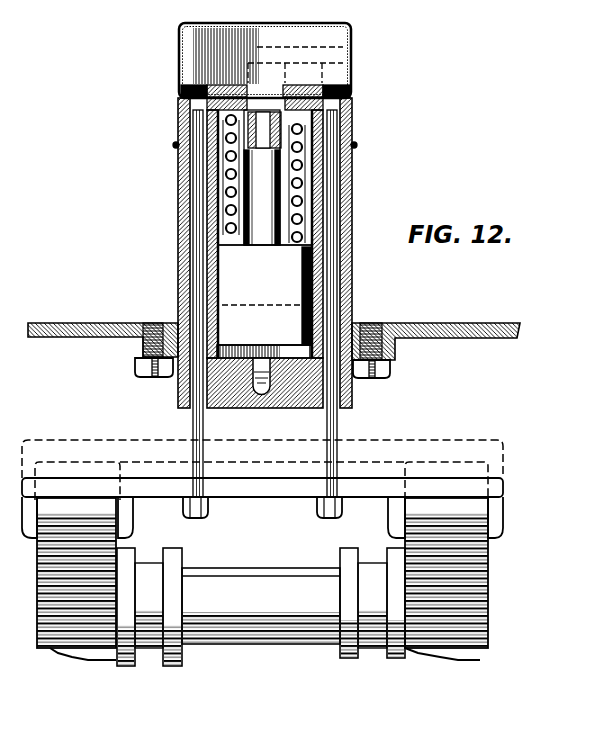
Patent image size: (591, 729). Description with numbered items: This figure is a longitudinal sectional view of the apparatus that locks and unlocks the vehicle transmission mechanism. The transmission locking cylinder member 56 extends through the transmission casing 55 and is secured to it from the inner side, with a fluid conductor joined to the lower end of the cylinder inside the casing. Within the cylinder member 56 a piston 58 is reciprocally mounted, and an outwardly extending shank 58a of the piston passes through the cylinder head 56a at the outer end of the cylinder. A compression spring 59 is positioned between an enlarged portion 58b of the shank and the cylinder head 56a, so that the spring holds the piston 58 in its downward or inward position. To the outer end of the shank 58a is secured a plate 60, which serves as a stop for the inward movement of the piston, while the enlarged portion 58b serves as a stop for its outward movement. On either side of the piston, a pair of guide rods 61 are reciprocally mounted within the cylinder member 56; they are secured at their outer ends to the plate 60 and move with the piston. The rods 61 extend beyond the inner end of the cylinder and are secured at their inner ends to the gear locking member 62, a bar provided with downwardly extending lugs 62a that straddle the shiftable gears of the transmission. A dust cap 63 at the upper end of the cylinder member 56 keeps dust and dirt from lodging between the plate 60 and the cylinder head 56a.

The transmission casing 55 is at (465, 323).
The transmission locking cylinder member 56 is at (317, 307).
The cylinder head 56a is at (313, 110).
The piston 58 is at (305, 270).
The shank of the piston 58a is at (290, 140).
The enlarged portion of the piston shank 58b is at (277, 173).
The compression spring 59 is at (300, 197).
The plate 60 is at (313, 88).
The guide rods 61 is at (327, 215).
The gear locking member 62 is at (373, 485).
The lugs 62a is at (125, 525).
The dust cap 63 is at (352, 36).